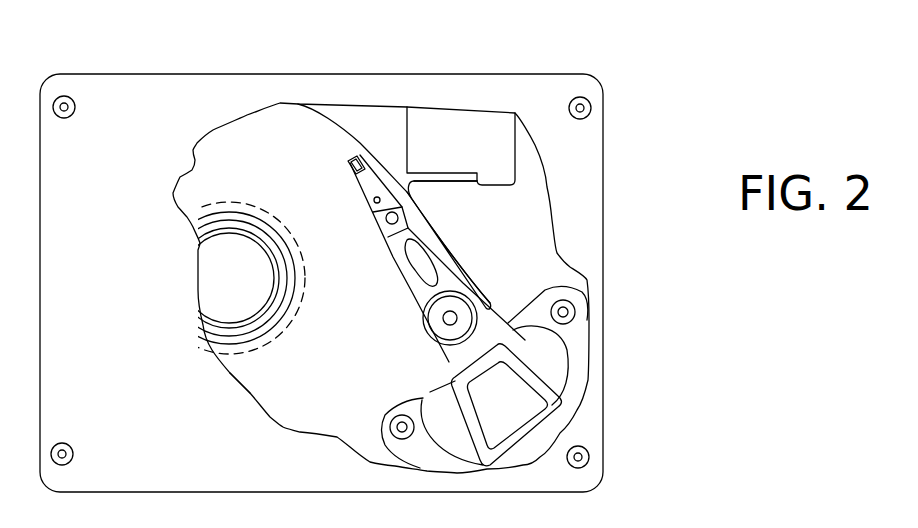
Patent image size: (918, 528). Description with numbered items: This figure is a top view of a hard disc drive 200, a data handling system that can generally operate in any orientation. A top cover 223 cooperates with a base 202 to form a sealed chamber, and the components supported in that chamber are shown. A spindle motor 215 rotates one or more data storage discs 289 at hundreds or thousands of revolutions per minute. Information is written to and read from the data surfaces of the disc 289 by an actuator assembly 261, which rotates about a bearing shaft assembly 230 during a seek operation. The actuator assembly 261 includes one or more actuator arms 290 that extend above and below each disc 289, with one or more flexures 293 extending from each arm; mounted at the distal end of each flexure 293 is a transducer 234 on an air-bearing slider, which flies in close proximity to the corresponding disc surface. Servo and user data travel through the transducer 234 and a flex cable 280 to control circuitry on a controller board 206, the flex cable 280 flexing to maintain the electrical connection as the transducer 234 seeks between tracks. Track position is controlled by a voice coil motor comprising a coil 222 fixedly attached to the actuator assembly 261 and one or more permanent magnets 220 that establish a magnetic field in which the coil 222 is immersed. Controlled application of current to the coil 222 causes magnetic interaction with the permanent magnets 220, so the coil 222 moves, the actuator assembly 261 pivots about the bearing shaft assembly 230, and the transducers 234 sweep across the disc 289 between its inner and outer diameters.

The hard disc drive 200 is at (663, 75).
The base 202 is at (363, 128).
The controller board 206 is at (470, 135).
The spindle motor 215 is at (222, 277).
The permanent magnets 220 is at (543, 338).
The coil 222 is at (557, 420).
The top cover 223 is at (140, 122).
The bearing shaft assembly 230 is at (410, 296).
The transducer 234 is at (352, 163).
The actuator assembly 261 is at (450, 320).
The flex cable 280 is at (443, 250).
The data storage disc 289 is at (277, 387).
The actuator arms 290 is at (402, 273).
The flexures 293 is at (368, 185).